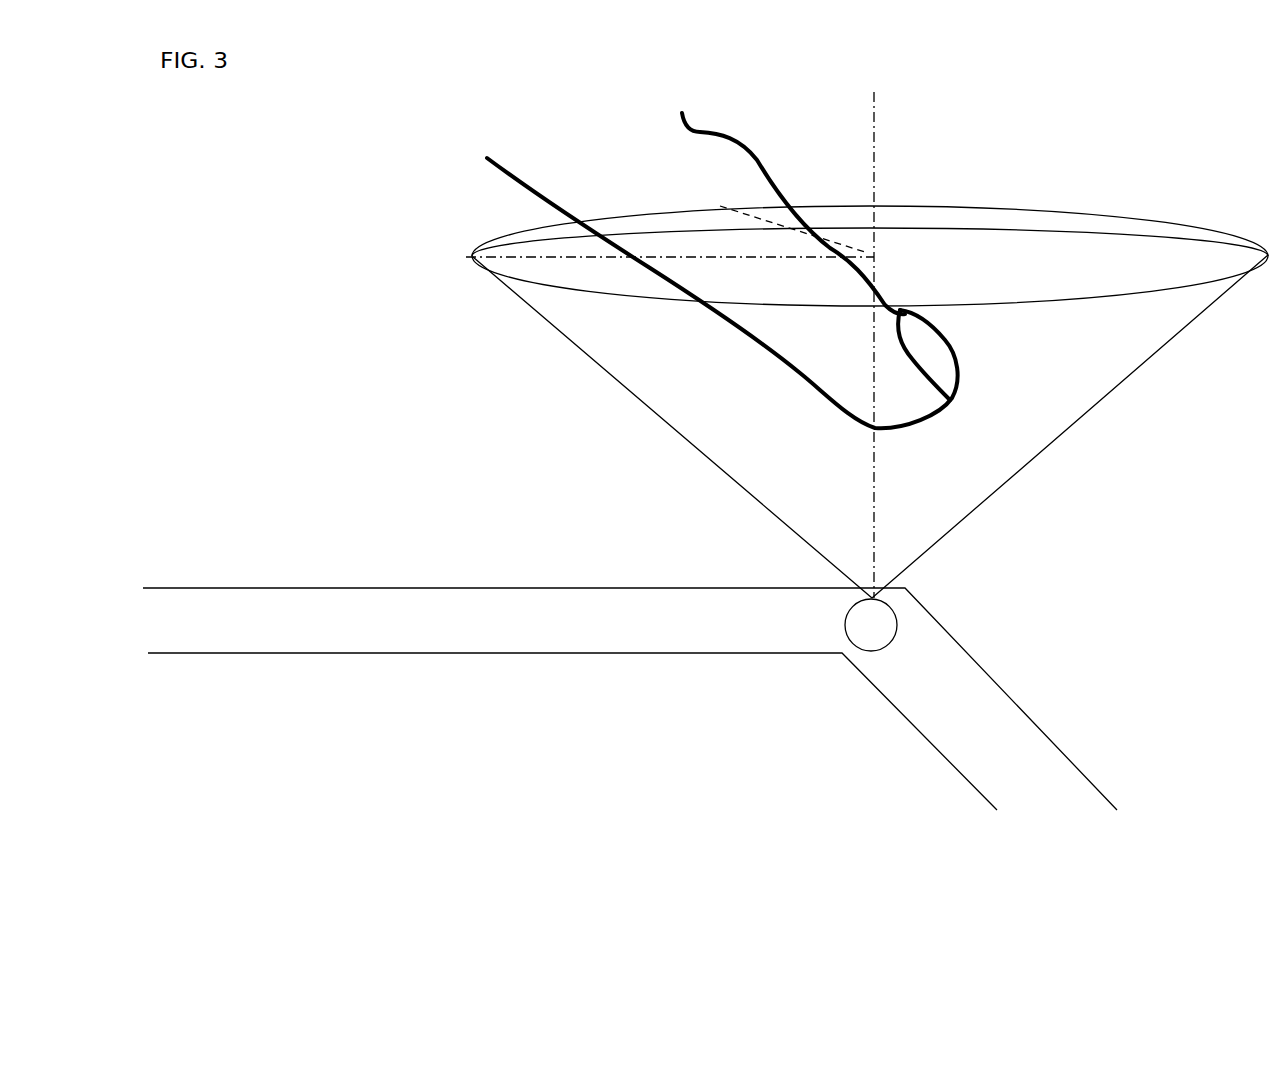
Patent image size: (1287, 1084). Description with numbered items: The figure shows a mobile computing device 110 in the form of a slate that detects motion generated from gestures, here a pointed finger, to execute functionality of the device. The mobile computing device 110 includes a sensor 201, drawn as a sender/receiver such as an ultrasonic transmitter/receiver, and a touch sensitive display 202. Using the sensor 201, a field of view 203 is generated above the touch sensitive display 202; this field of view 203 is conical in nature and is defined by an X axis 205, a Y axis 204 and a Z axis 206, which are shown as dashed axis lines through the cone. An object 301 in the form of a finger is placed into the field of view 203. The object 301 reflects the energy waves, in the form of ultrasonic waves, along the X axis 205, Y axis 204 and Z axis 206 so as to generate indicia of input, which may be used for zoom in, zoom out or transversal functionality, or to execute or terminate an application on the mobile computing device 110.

The mobile computing device 110 is at (1199, 102).
The sensor 201 is at (897, 626).
The touch sensitive display 202 is at (418, 780).
The field of view 203 is at (1025, 470).
The Y axis 204 is at (652, 176).
The X axis 205 is at (388, 278).
The Z axis 206 is at (813, 60).
The object 301 is at (487, 160).